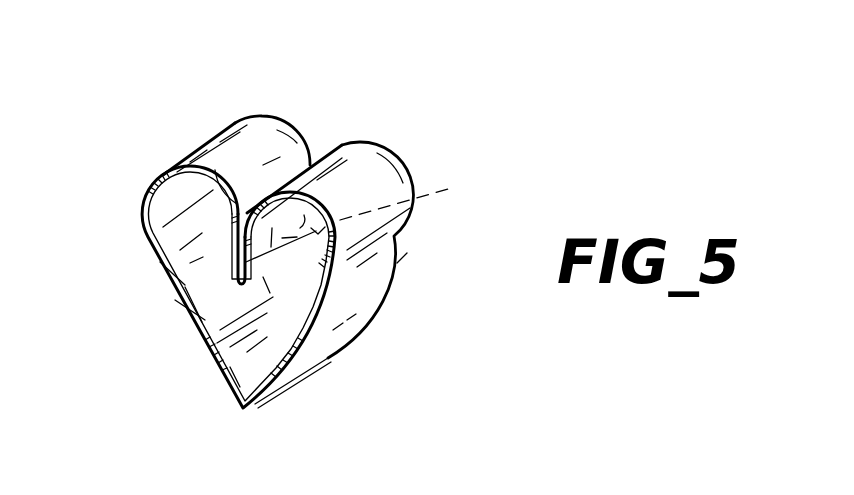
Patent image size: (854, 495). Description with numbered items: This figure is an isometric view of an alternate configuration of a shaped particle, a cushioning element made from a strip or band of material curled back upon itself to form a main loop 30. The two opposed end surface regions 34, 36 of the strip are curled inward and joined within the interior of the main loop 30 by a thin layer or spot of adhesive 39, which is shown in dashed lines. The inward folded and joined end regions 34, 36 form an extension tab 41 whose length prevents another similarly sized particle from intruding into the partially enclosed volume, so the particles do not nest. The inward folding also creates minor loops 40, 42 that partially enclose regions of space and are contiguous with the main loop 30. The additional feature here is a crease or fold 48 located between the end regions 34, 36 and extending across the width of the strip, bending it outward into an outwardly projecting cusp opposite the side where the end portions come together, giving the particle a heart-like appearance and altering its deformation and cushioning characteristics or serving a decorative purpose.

The main loop 30 is at (200, 350).
The end surface region 34 is at (238, 238).
The end surface region 36 is at (248, 248).
The adhesive 39 is at (420, 196).
The minor loop 40 is at (342, 167).
The extension tab 41 is at (237, 283).
The minor loop 42 is at (233, 160).
The crease or fold 48 is at (250, 407).